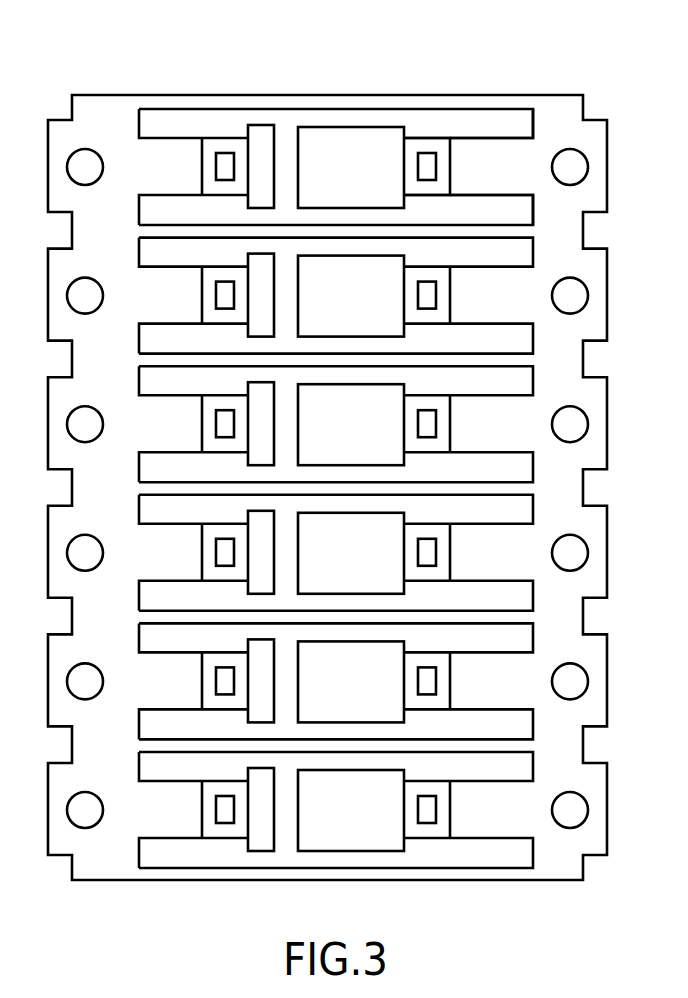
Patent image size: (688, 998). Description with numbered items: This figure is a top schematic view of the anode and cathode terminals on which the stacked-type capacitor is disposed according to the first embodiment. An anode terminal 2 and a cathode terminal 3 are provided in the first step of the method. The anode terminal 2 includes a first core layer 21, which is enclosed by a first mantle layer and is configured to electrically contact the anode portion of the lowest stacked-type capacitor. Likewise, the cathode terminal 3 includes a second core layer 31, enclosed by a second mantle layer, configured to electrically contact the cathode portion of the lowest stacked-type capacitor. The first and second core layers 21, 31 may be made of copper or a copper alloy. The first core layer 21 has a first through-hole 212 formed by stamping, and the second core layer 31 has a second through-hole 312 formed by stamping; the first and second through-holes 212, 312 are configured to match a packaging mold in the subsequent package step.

The anode terminal 2 is at (173, 147).
The first core layer 21 is at (237, 145).
The first through-hole 212 is at (222, 160).
The cathode terminal 3 is at (483, 147).
The second core layer 31 is at (413, 145).
The second through-hole 312 is at (427, 160).